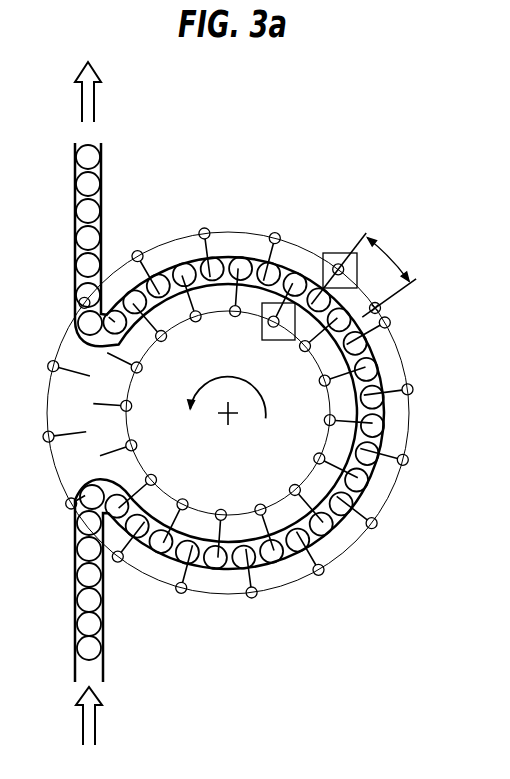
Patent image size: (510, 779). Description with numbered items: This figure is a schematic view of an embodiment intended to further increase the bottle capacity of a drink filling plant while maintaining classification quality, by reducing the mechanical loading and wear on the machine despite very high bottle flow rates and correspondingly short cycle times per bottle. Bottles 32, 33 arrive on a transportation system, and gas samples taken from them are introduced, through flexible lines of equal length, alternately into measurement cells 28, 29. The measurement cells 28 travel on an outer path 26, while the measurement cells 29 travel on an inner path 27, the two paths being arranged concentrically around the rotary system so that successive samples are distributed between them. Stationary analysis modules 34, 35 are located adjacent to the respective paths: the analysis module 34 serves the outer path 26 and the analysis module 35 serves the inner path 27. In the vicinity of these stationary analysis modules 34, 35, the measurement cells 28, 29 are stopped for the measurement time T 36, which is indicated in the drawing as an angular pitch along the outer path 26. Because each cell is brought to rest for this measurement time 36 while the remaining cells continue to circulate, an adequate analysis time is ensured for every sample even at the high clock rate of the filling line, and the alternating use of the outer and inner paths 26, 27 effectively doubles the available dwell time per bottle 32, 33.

The outer path 26 is at (345, 557).
The inner path 27 is at (279, 505).
The measurement cell 28 is at (349, 253).
The measurement cell 29 is at (282, 341).
The bottle 32 is at (310, 280).
The bottle 33 is at (296, 252).
The stationary analysis module 34 is at (337, 253).
The stationary analysis module 35 is at (262, 341).
The measurement time T 36 is at (408, 250).